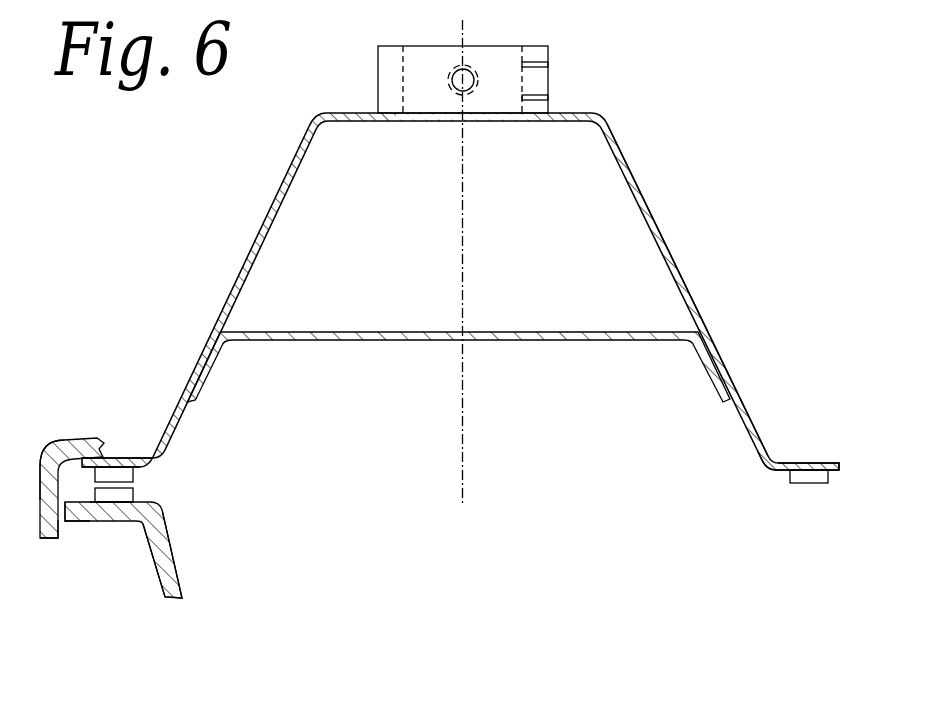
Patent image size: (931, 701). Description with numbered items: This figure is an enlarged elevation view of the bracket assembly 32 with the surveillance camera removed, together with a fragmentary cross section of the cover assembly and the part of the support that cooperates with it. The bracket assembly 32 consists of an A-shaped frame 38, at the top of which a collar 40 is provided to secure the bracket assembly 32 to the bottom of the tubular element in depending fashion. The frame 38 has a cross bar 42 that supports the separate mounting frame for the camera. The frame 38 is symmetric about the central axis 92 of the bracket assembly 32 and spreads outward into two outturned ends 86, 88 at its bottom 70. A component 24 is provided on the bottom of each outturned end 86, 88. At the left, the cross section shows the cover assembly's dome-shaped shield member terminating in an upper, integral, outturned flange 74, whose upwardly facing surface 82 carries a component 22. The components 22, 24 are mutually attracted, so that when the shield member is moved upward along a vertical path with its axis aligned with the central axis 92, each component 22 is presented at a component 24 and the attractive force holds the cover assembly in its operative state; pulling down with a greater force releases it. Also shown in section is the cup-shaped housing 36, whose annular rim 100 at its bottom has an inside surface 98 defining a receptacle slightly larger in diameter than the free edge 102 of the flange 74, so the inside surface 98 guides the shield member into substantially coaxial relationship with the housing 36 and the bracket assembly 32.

The component 22 is at (50, 458).
The component 24 is at (98, 473).
The bracket assembly 32 is at (680, 261).
The cup-shaped housing 36 is at (52, 537).
The A-shaped frame 38 is at (693, 293).
The collar 40 is at (493, 70).
The cross bar 42 is at (555, 332).
The bottom 70 is at (772, 472).
The outturned flange 74 is at (122, 518).
The upwardly facing surface 82 is at (135, 501).
The outturned end 86 is at (808, 463).
The outturned end 88 is at (118, 457).
The central axis 92 is at (464, 204).
The inside surface 98 is at (118, 516).
The annular rim 100 is at (40, 498).
The free edge 102 is at (64, 519).